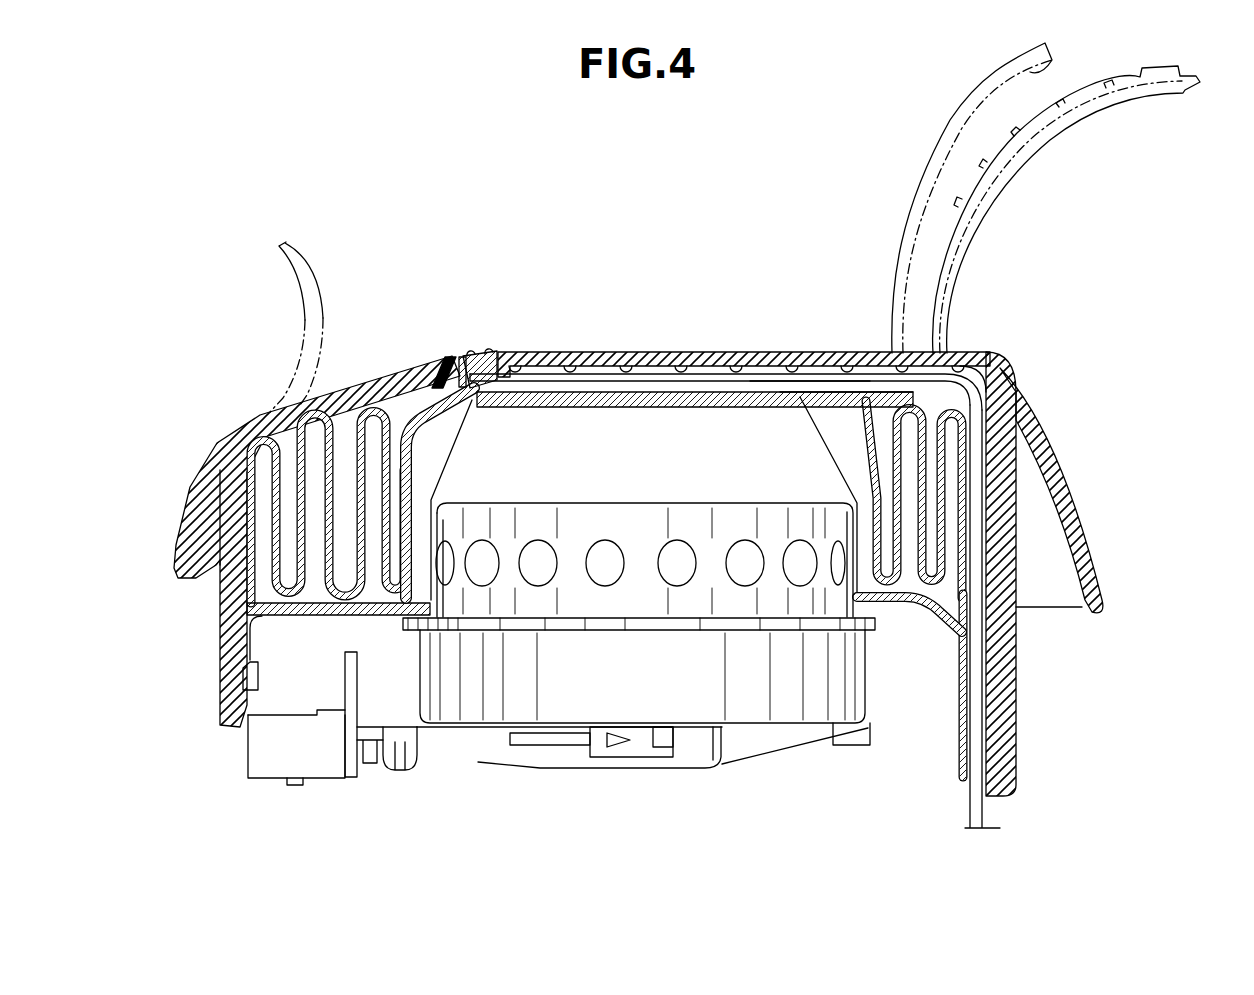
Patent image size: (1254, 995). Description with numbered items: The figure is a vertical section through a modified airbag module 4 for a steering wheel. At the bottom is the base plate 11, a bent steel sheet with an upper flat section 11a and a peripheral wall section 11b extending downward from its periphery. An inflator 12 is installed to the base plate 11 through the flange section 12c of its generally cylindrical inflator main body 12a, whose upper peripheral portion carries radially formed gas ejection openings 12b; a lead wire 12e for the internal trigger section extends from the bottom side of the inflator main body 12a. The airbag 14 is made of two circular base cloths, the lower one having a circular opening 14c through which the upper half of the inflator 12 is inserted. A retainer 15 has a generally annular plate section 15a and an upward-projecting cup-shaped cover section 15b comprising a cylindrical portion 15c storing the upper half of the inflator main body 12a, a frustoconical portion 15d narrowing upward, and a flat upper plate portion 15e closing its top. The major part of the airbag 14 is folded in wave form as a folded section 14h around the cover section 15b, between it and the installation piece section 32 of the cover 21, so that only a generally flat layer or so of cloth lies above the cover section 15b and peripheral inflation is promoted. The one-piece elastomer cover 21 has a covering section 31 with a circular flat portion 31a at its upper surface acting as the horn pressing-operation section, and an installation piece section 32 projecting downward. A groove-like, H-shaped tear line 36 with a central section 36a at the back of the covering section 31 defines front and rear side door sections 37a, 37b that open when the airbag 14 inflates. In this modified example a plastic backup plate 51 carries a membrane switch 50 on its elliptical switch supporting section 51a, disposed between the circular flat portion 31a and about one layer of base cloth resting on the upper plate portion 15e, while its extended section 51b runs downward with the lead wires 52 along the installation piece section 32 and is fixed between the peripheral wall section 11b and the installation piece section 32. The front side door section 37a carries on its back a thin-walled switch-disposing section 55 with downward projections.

The airbag module 4 is at (416, 146).
The base plate 11 is at (960, 766).
The upper flat section 11a is at (306, 618).
The peripheral wall section 11b is at (960, 732).
The inflator 12 is at (783, 704).
The inflator main body 12a is at (645, 510).
The gas ejection openings 12b is at (678, 552).
The flange section 12c is at (415, 632).
The lead wire 12e is at (545, 740).
The airbag 14 is at (421, 405).
The circular opening 14c is at (470, 603).
The folded section 14h is at (246, 464).
The retainer 15 is at (893, 606).
The plate section 15a is at (892, 586).
The cover section 15b is at (819, 395).
The cylindrical portion 15c is at (426, 532).
The frustoconical portion 15d is at (465, 436).
The upper plate portion 15e is at (572, 408).
The cover 21 is at (1017, 398).
The covering section 31 is at (344, 386).
The circular flat portion 31a is at (607, 351).
The installation piece section 32 is at (1007, 728).
The tear line 36 is at (462, 350).
The central section 36a is at (474, 362).
The front side door section 37a is at (1112, 104).
The rear side door section 37b is at (294, 279).
The membrane switch 50 is at (655, 373).
The backup plate 51 is at (704, 391).
The switch supporting section 51a is at (749, 391).
The extended section 51b is at (975, 800).
The lead wires 52 is at (986, 378).
The switch-disposing section 55 is at (590, 362).